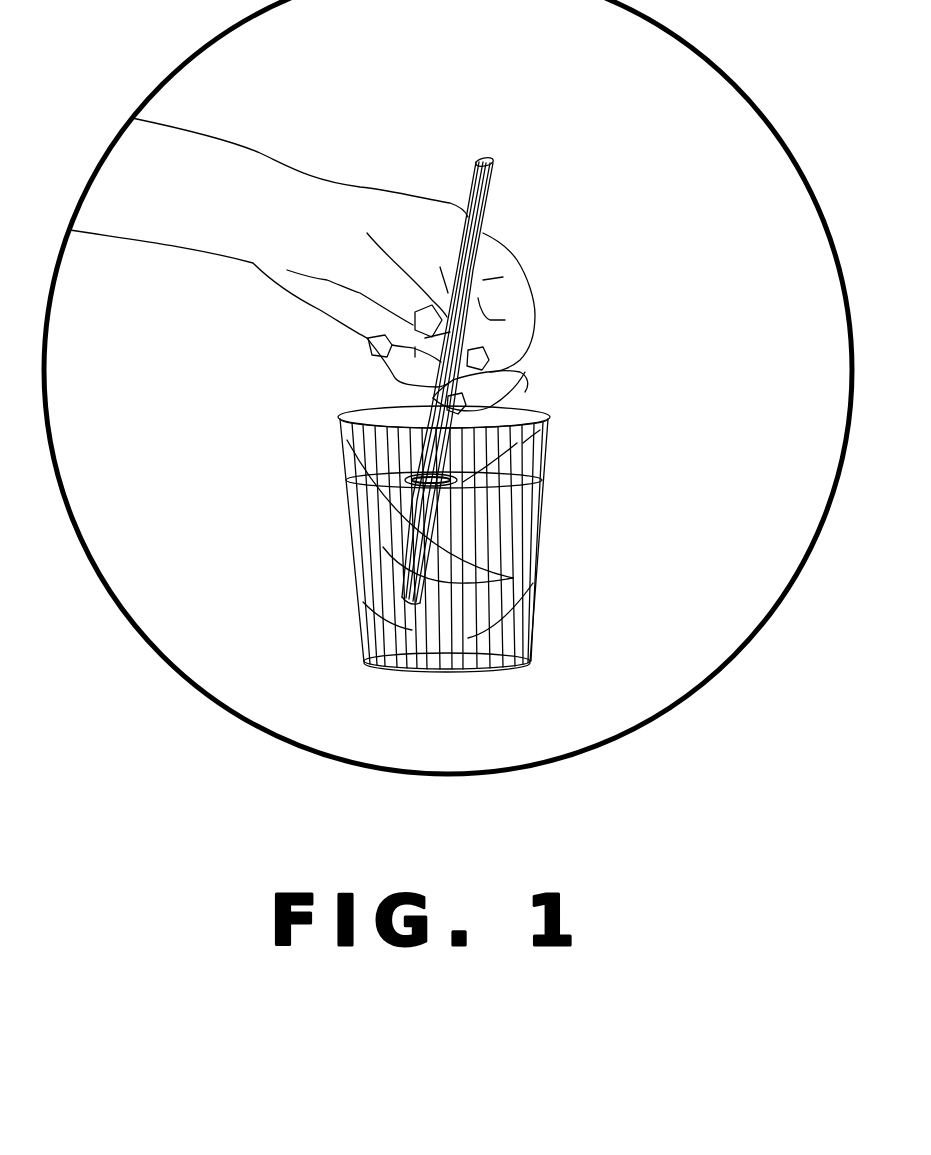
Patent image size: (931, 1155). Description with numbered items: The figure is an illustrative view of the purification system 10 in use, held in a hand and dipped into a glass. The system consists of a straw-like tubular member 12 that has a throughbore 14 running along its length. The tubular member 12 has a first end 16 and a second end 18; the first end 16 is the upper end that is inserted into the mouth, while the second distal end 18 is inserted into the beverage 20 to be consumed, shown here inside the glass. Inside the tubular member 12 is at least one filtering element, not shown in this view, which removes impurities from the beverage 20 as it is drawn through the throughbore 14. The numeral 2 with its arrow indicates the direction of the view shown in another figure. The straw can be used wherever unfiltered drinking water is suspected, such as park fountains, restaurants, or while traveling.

The purification system 10 is at (498, 116).
The tubular member 12 is at (485, 227).
The throughbore 14 is at (487, 160).
The first end 16 is at (475, 170).
The second end 18 is at (398, 592).
The beverage 20 is at (517, 482).
The view direction for FIG. 2 is at (495, 190).